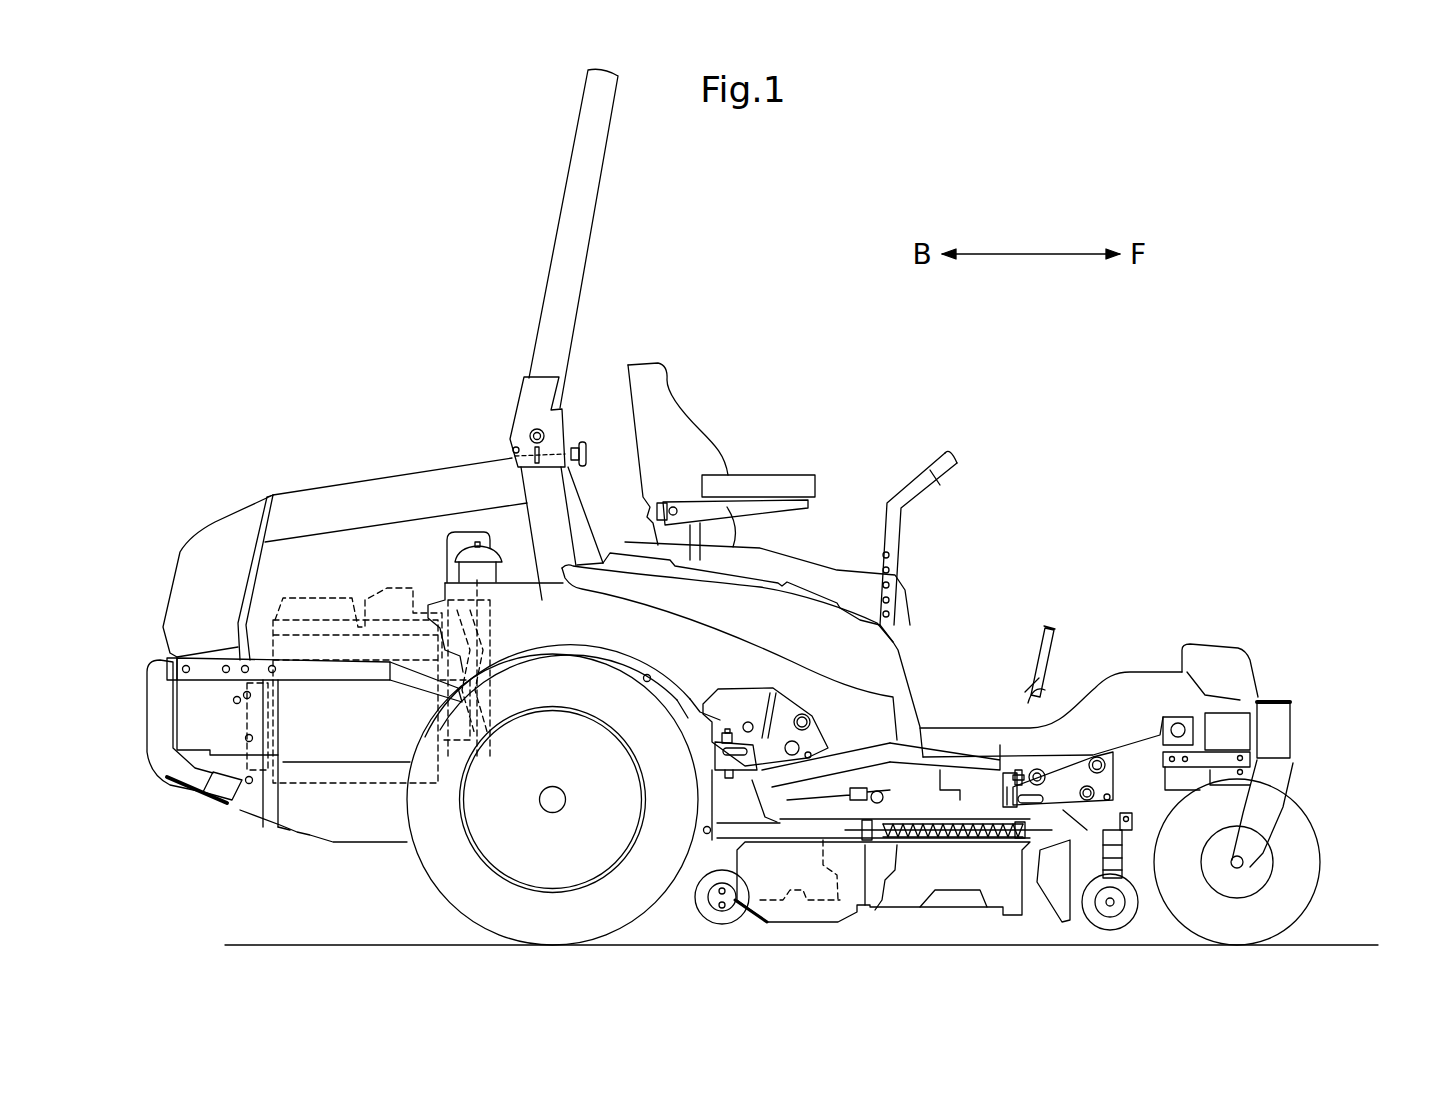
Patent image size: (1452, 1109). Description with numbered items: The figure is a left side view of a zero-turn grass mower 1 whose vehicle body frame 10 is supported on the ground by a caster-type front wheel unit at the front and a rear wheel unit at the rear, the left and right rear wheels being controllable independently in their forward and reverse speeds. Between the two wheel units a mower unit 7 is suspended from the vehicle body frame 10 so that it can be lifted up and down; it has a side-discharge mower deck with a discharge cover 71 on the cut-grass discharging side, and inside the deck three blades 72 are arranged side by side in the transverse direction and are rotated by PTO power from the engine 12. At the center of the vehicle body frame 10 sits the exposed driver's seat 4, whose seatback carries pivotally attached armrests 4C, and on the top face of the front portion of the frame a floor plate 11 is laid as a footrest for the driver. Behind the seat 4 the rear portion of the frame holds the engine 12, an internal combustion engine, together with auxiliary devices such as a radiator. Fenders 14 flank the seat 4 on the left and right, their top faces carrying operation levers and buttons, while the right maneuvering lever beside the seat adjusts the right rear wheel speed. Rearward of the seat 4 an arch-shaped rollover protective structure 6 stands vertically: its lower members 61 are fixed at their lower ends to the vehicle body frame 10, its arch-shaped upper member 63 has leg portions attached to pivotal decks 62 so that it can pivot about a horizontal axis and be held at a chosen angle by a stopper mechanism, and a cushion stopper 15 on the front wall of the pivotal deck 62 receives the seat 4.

The riding mower / front frame 1 is at (1311, 715).
The driver's seat 4 is at (721, 458).
The armrest 4C is at (780, 488).
The Rollover Protective Structure (ROPS) 6 is at (547, 334).
The lower member 61 is at (543, 497).
The pivotal deck 62 is at (530, 413).
The upper member 63 is at (583, 218).
The mower unit 7 is at (917, 903).
The discharge cover 71 is at (1073, 907).
The blade 72 is at (902, 908).
The vehicle body frame 10 is at (306, 851).
The floor plate 11 is at (953, 727).
The engine 12 is at (325, 605).
The fender 14 is at (807, 623).
The cushion stopper 15 is at (582, 440).